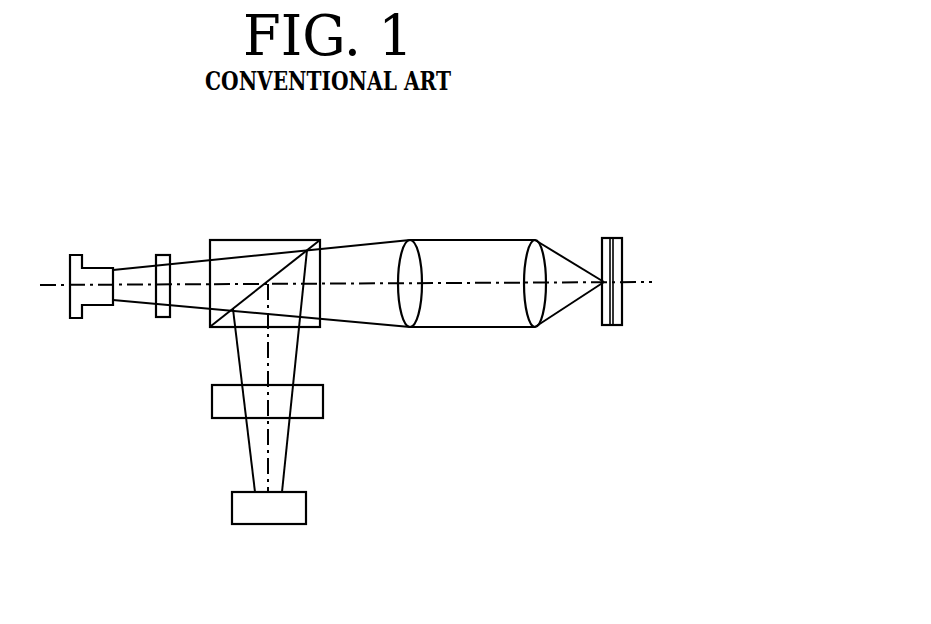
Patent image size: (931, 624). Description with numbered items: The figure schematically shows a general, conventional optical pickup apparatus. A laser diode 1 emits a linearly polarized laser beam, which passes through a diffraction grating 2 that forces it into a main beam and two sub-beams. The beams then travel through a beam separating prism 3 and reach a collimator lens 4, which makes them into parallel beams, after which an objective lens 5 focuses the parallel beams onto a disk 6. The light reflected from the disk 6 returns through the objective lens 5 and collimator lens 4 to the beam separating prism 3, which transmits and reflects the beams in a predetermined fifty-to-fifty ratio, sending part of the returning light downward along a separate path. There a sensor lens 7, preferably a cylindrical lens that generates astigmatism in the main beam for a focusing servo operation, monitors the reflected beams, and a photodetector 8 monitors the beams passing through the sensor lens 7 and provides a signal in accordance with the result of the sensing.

The laser diode 1 is at (77, 253).
The diffraction grating 2 is at (163, 253).
The beam separating prism 3 is at (258, 238).
The collimator lens 4 is at (410, 238).
The objective lens 5 is at (535, 237).
The disk 6 is at (612, 236).
The sensor lens 7 is at (323, 399).
The photodetector 8 is at (308, 507).